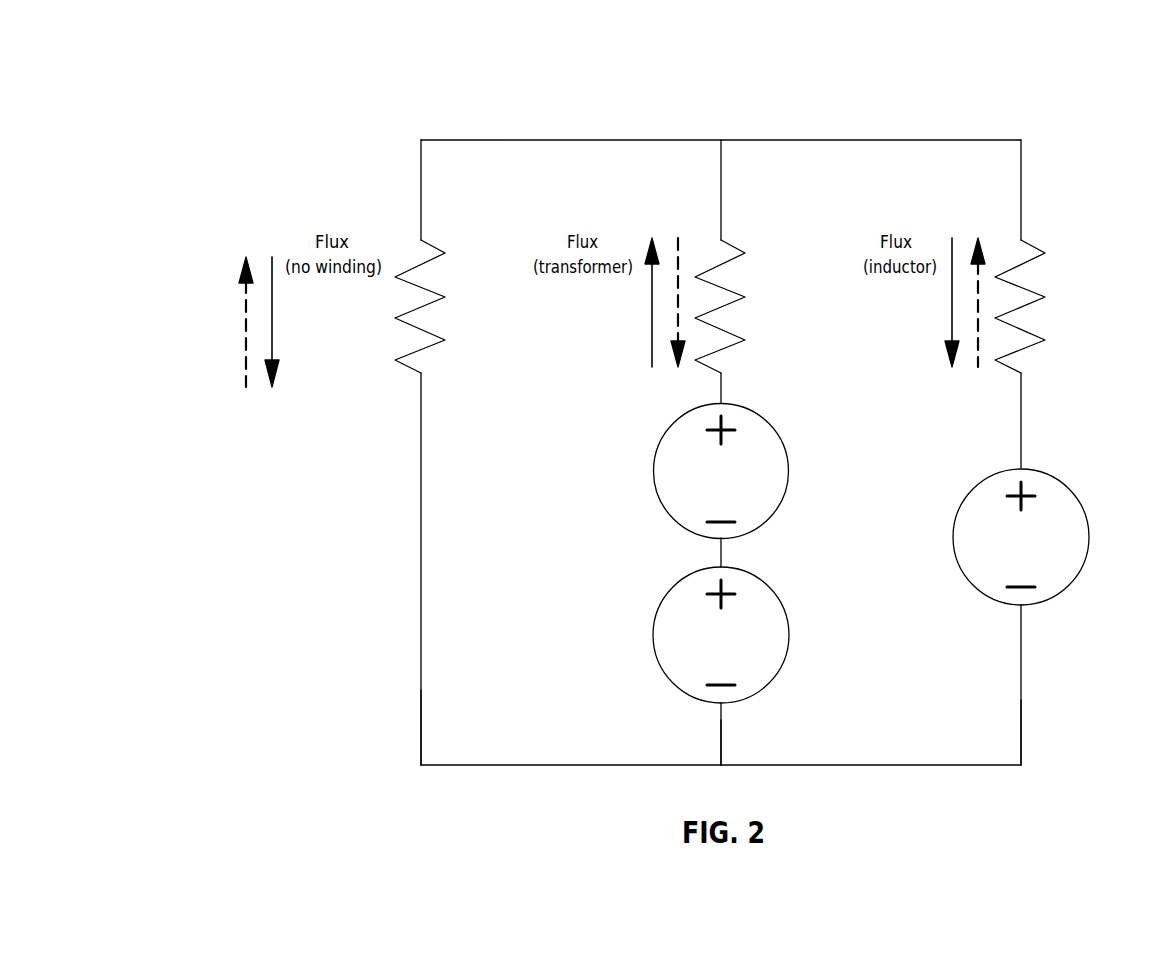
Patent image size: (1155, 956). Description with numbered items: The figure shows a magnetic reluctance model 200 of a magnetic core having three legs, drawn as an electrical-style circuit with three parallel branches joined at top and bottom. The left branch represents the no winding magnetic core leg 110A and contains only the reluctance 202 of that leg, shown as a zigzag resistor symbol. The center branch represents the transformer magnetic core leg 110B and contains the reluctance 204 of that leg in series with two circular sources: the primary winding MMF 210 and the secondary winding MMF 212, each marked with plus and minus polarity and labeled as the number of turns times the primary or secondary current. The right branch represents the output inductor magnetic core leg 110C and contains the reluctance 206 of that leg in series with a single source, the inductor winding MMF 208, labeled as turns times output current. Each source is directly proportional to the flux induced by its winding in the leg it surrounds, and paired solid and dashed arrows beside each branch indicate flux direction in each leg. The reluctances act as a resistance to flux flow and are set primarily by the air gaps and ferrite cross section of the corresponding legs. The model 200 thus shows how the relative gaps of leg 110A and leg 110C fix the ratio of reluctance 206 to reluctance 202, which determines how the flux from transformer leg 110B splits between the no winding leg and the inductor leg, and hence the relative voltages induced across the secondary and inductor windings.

The magnetic reluctance model 200 is at (290, 96).
The reluctance of no winding magnetic core leg 202 is at (449, 244).
The reluctance of transformer magnetic core leg 204 is at (749, 243).
The reluctance of output inductor magnetic core leg 206 is at (1049, 243).
The inductor winding MMF 208 is at (1088, 524).
The primary winding MMF 210 is at (788, 461).
The secondary winding MMF 212 is at (788, 624).
The no winding magnetic core leg 110A is at (421, 704).
The transformer magnetic core leg 110B is at (721, 733).
The output inductor magnetic core leg 110C is at (1021, 719).